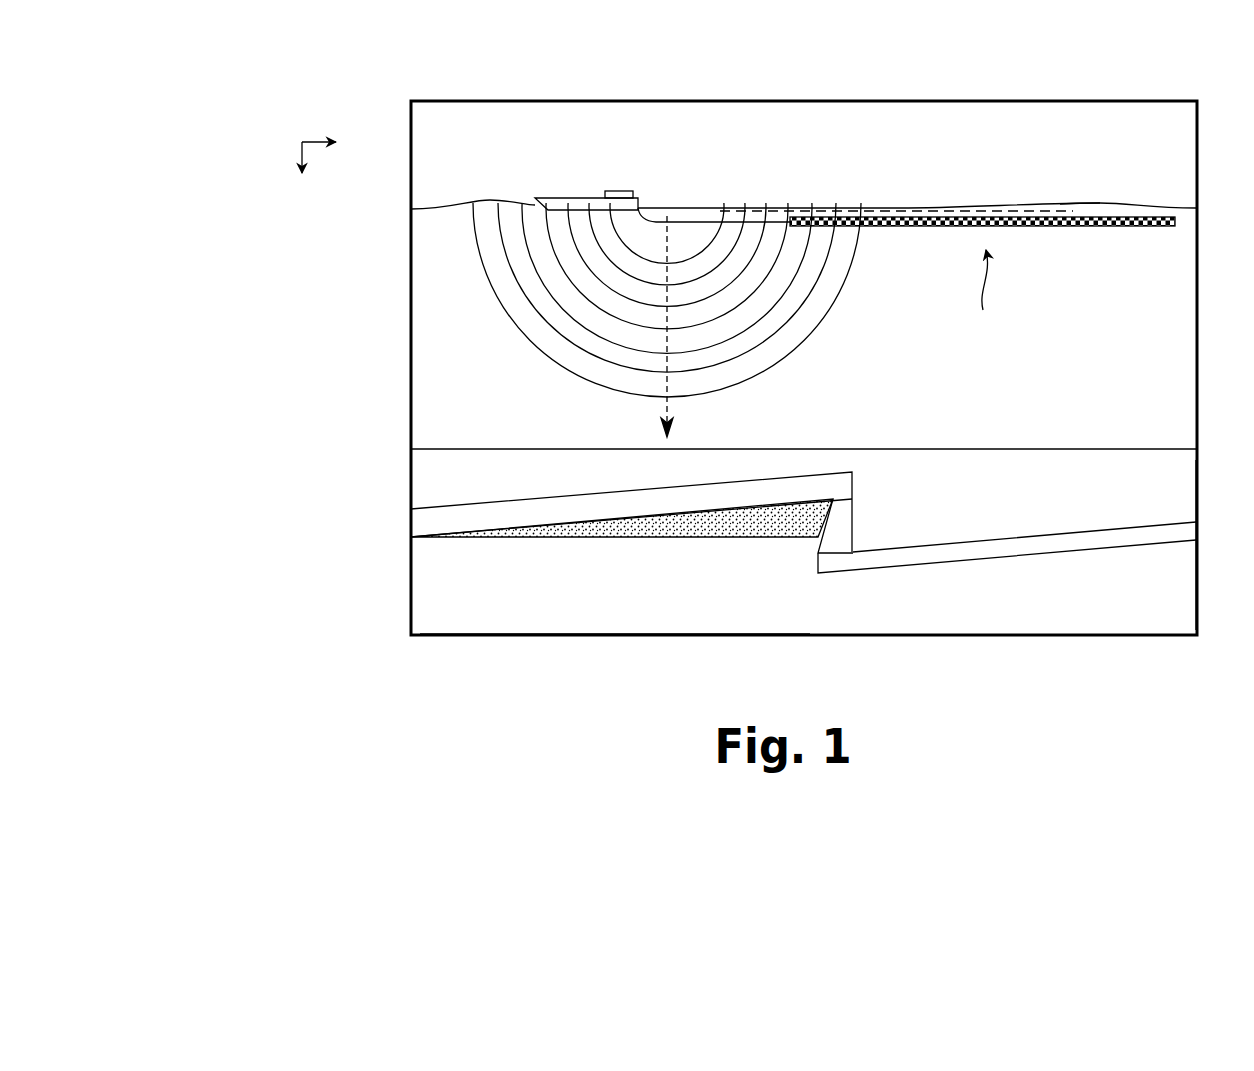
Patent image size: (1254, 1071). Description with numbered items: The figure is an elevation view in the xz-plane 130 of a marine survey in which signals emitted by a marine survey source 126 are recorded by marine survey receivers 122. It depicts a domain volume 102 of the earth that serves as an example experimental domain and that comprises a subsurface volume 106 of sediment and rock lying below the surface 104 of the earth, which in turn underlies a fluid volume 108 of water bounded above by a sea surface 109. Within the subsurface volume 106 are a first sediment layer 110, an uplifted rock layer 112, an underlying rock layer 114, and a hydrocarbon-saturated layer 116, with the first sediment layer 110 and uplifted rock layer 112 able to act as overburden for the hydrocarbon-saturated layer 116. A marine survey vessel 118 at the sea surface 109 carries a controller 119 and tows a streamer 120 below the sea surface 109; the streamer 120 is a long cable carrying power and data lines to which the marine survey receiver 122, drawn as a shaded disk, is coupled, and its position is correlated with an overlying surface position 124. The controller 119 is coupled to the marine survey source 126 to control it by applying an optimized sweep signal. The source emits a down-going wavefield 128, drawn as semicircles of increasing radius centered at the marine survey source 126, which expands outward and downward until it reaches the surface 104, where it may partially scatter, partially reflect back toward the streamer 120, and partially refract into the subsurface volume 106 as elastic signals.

The domain volume 102 is at (318, 269).
The surface of the earth 104 is at (467, 449).
The subsurface volume 106 is at (430, 466).
The fluid volume 108 is at (430, 353).
The sea surface 109 is at (934, 207).
The first sediment layer 110 is at (1026, 508).
The uplifted rock layer 112 is at (430, 526).
The underlying rock layer 114 is at (533, 628).
The hydrocarbon-saturated layer 116 is at (632, 538).
The marine survey vessel 118 is at (578, 198).
The controller 119 is at (622, 191).
The streamer 120 is at (1002, 293).
The marine survey receiver 122 is at (1100, 227).
The surface position 124 is at (1100, 204).
The marine survey source 126 is at (666, 214).
The down-going wavefield 128 is at (829, 311).
The xz-plane 130 is at (302, 142).